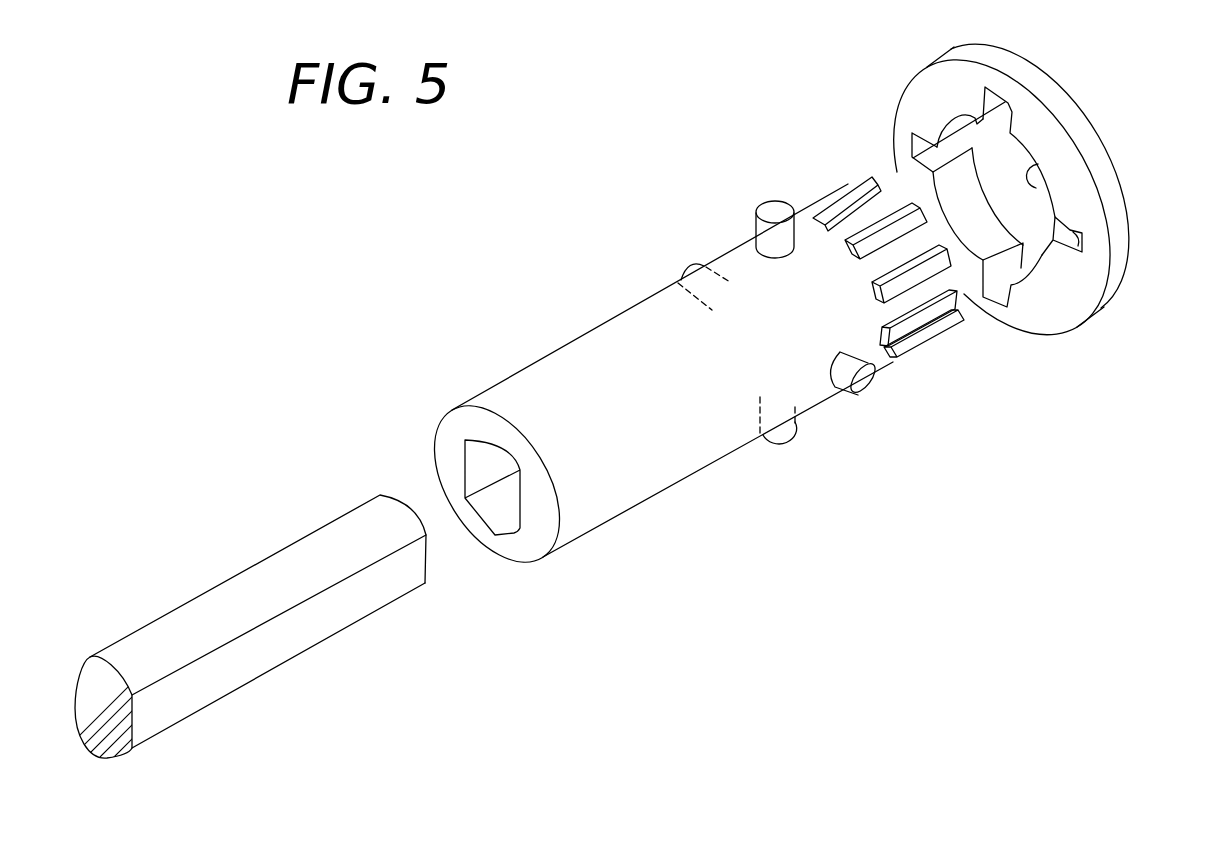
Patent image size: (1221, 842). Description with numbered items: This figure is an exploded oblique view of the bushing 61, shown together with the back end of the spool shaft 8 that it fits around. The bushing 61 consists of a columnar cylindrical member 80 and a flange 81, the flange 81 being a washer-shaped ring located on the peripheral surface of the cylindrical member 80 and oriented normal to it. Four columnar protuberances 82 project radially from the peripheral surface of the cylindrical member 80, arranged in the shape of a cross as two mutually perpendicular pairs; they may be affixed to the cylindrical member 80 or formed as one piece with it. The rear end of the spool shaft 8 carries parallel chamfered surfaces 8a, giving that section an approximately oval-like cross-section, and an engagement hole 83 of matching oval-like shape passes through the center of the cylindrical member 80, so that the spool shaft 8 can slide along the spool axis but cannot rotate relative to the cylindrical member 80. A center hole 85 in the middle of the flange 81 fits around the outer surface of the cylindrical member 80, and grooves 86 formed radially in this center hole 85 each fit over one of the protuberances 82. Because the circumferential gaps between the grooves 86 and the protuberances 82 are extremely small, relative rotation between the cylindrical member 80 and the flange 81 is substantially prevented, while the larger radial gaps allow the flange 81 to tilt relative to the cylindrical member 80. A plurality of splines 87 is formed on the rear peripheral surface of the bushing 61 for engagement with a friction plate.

The spool shaft 8 is at (237, 611).
The chamfered surfaces 8a is at (385, 592).
The bushing 61 is at (667, 229).
The cylindrical member 80 is at (686, 374).
The flange 81 is at (1030, 222).
The protuberances 82 is at (690, 263).
The engagement hole 83 is at (500, 498).
The center hole 85 is at (1043, 173).
The grooves 86 is at (912, 148).
The splines 87 is at (850, 200).